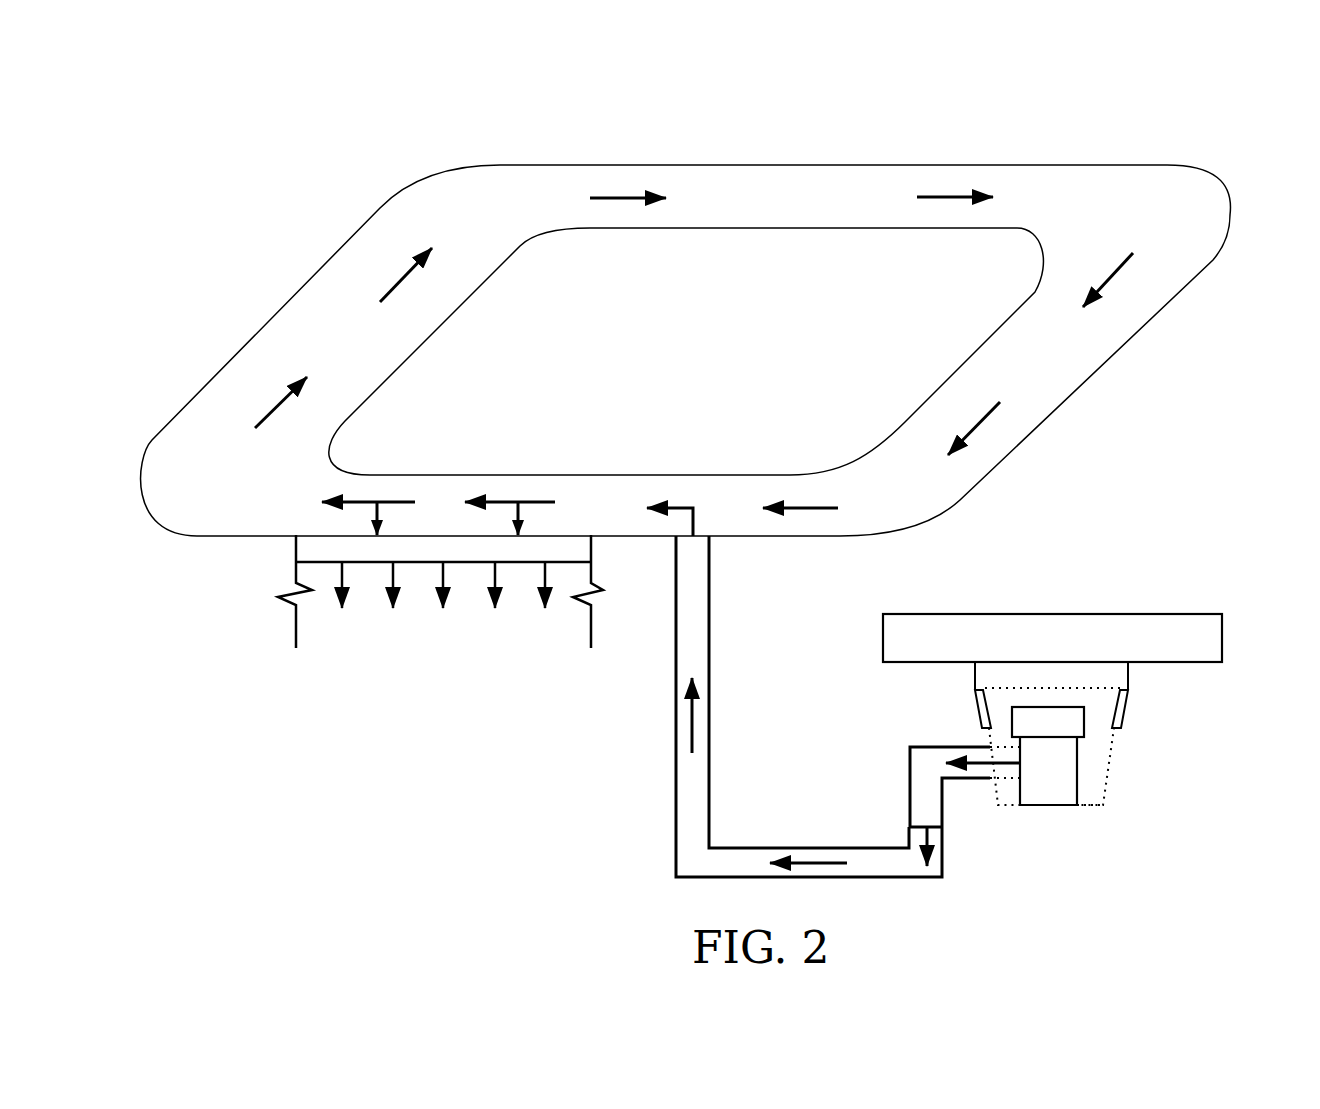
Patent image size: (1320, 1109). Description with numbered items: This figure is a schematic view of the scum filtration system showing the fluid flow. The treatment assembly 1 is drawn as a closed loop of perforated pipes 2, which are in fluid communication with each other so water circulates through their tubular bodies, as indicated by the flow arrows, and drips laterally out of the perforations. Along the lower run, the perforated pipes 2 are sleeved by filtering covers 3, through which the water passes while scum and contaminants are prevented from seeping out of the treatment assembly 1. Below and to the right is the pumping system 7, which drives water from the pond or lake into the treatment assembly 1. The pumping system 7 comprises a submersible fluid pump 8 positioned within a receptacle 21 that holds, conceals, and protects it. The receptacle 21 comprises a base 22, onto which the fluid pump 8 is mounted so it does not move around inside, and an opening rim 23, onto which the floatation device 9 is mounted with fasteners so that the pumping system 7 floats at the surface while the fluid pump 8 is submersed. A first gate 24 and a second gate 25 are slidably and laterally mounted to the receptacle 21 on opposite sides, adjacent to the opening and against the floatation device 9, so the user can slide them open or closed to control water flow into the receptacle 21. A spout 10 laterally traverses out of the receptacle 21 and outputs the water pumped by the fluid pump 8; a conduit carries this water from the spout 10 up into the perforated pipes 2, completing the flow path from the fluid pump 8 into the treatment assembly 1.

The treatment assembly 1 is at (288, 125).
The perforated pipes 2 is at (1020, 170).
The filtering covers 3 is at (585, 550).
The pumping system 7 is at (1176, 561).
The fluid pump 8 is at (1033, 800).
The floatation device 9 is at (886, 638).
The spout 10 is at (914, 763).
The receptacle 21 is at (1113, 750).
The base 22 is at (1084, 812).
The opening rim 23 is at (1128, 672).
The first gate 24 is at (976, 706).
The second gate 25 is at (1126, 708).